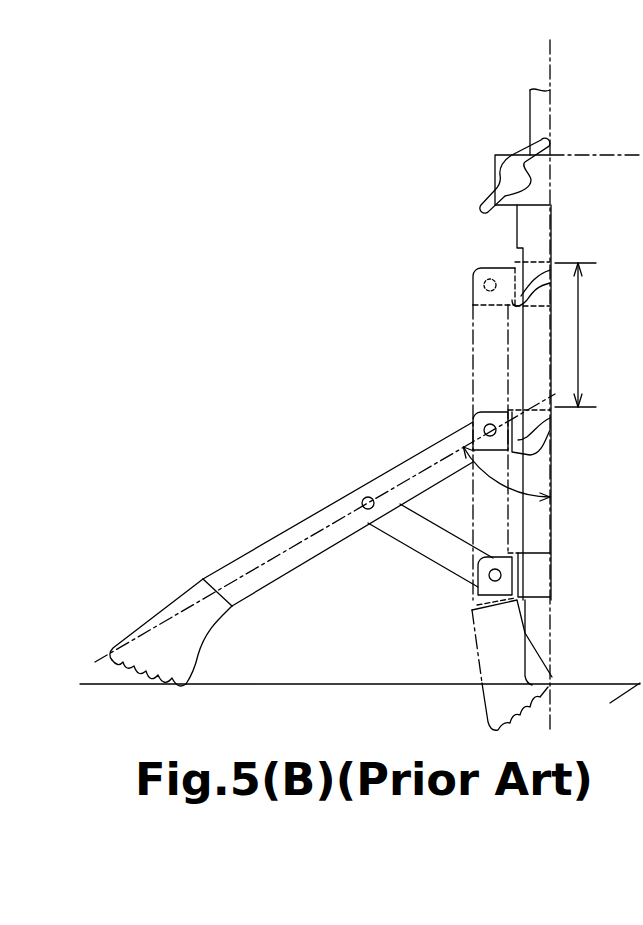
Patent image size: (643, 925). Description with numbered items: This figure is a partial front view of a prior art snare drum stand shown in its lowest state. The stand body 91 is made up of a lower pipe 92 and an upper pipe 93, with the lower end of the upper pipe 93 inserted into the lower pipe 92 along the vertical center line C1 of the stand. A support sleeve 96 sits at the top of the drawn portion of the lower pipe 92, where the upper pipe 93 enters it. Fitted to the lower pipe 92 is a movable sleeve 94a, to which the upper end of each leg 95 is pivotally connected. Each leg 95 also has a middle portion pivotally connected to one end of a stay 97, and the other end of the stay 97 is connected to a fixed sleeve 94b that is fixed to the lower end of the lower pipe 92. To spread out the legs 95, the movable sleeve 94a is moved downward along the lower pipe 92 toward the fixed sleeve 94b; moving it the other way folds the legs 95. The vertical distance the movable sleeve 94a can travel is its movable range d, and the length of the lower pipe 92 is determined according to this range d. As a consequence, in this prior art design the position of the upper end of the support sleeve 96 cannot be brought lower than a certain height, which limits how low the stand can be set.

The stand body 91 is at (368, 335).
The lower pipe 92 is at (520, 328).
The upper pipe 93 is at (530, 111).
The movable sleeve 94a is at (551, 438).
The fixed sleeve 94b is at (551, 580).
The leg 95 is at (272, 538).
The support sleeve 96 is at (551, 190).
The stay 97 is at (418, 553).
The center line C1 is at (551, 92).
The movable range d is at (575, 335).